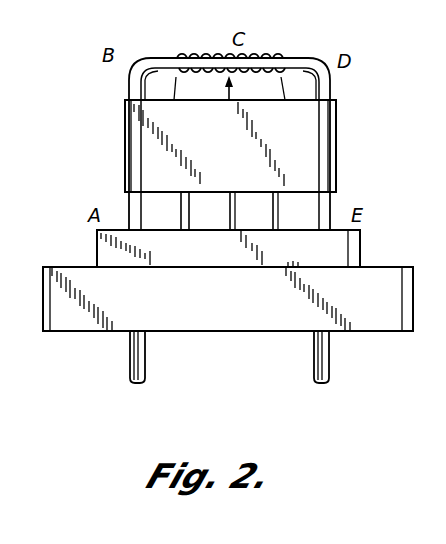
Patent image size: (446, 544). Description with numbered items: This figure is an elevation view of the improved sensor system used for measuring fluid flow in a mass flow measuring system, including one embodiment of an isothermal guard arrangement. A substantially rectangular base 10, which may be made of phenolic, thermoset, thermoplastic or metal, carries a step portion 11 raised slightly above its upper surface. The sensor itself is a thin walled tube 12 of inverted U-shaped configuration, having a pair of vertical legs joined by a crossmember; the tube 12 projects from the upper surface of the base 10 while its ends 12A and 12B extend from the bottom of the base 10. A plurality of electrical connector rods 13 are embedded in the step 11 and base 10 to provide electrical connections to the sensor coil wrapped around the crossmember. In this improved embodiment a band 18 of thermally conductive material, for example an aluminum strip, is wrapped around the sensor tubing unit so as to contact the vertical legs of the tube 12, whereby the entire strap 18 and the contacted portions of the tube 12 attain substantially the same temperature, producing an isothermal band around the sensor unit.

The base portion 10 is at (62, 276).
The step portion 11 is at (338, 254).
The thin walled tube 12 is at (127, 82).
The end of tube 12A is at (129, 354).
The end of tube 12B is at (313, 353).
The electrical connector rods 13 is at (270, 197).
The band of thermally conductive material 18 is at (323, 150).